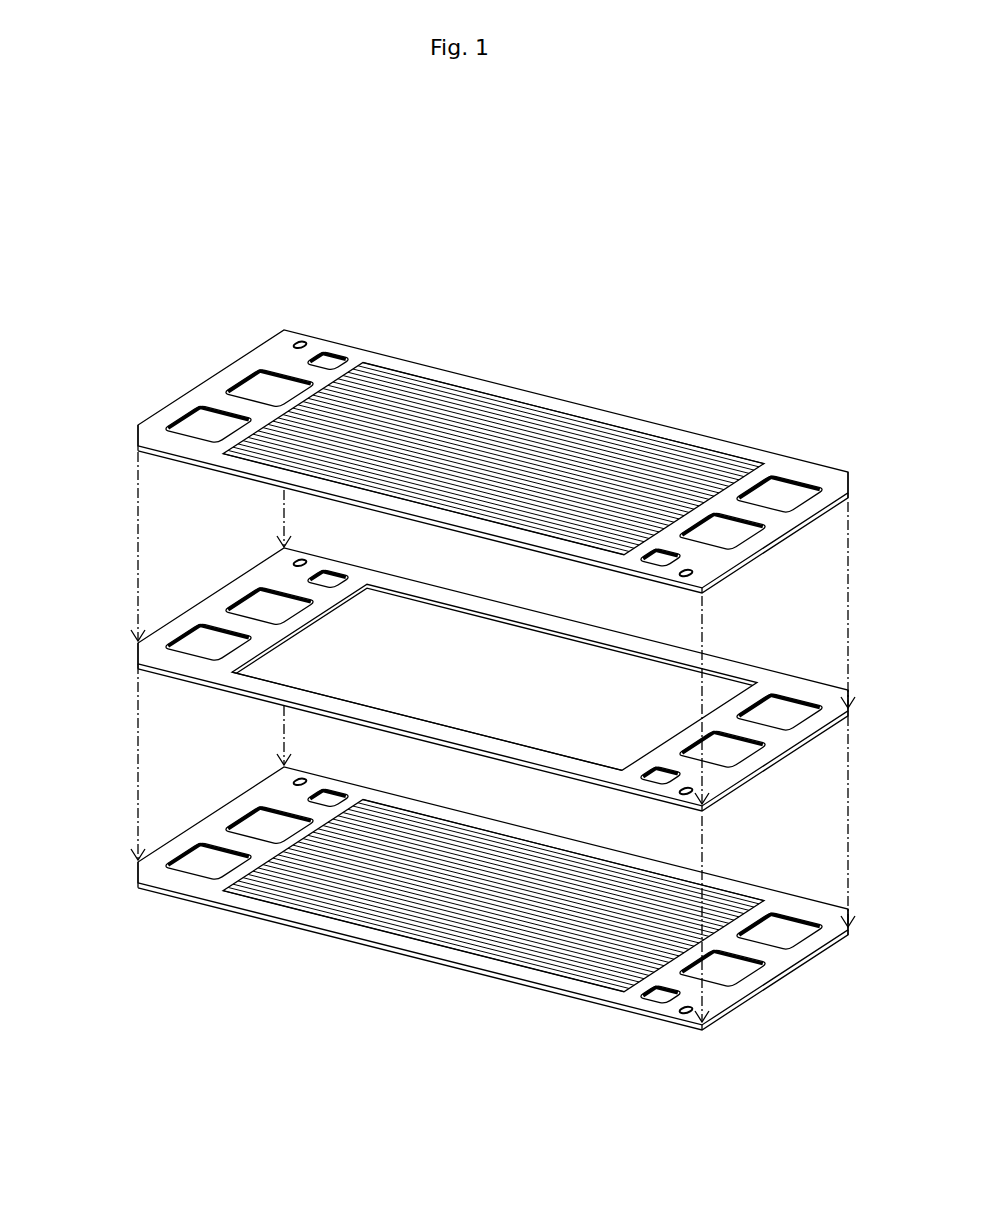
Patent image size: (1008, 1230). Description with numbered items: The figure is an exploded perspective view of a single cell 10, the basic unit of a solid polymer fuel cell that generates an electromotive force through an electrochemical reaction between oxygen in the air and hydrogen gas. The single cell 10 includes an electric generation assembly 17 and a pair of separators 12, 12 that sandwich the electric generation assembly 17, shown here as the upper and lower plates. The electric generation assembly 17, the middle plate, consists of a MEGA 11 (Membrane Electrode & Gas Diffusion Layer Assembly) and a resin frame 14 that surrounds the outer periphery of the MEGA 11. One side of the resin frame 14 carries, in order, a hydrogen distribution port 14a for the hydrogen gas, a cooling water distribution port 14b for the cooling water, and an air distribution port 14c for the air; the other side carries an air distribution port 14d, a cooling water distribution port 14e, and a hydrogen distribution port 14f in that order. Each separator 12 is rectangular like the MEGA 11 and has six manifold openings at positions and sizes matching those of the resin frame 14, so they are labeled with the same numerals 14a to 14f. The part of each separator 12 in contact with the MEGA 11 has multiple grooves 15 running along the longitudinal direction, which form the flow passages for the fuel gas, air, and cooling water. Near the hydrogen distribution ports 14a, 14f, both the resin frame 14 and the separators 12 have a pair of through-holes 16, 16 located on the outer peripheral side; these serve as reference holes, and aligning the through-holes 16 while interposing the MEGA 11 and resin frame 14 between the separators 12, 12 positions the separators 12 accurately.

The single cell 10 is at (851, 298).
The MEGA 11 is at (402, 632).
The separator 12 is at (482, 366).
The resin frame 14 is at (735, 667).
The hydrogen distribution port 14a is at (318, 360).
The cooling water distribution port 14b is at (268, 385).
The air distribution port 14c is at (197, 427).
The air distribution port 14d is at (790, 497).
The cooling water distribution port 14e is at (720, 541).
The hydrogen distribution port 14f is at (652, 563).
The grooves 15 is at (637, 470).
The through-hole 16 is at (304, 344).
The electric generation assembly 17 is at (482, 714).